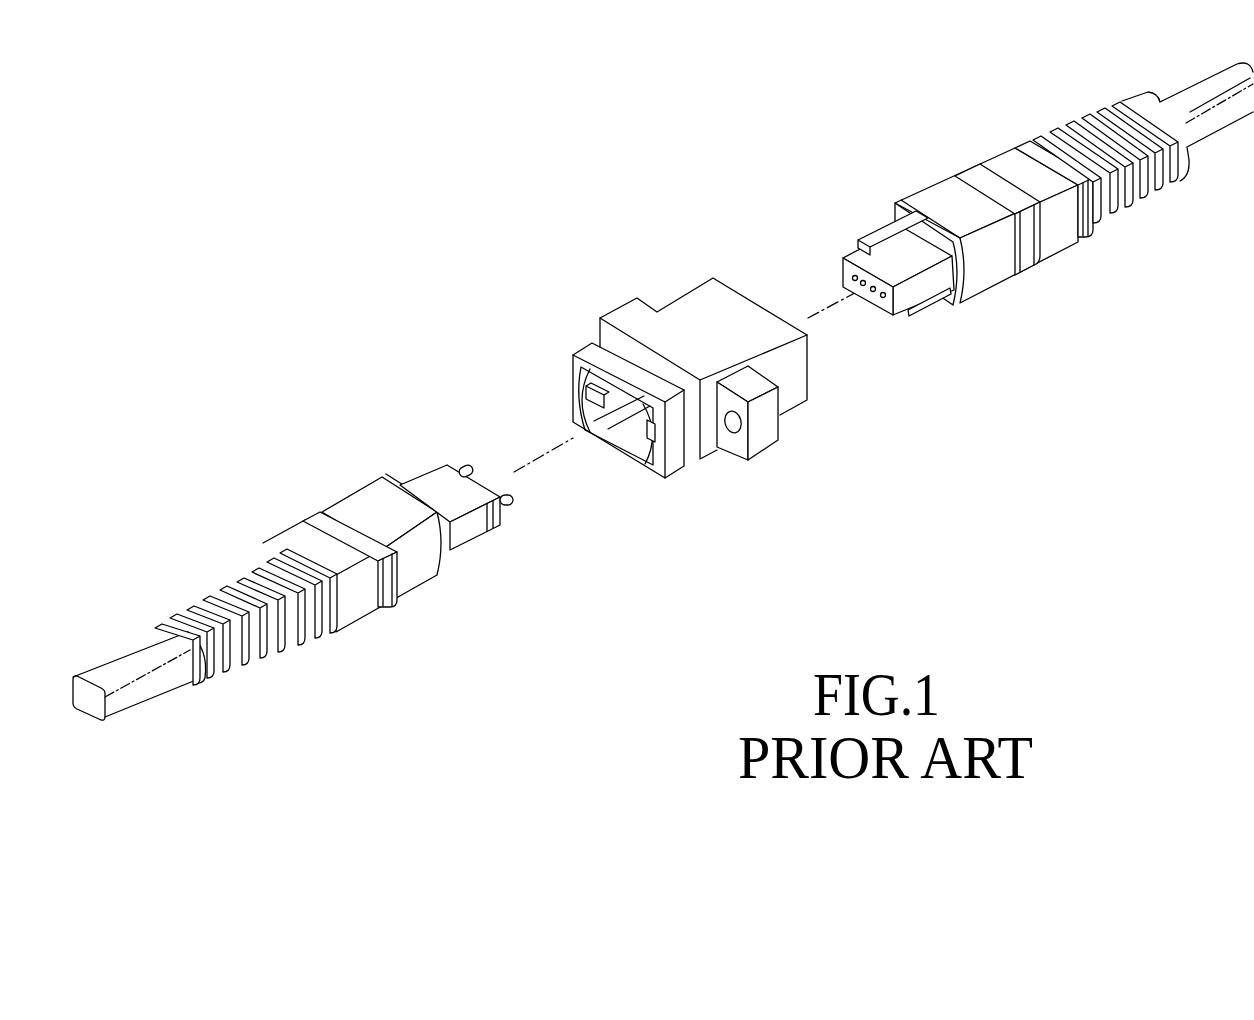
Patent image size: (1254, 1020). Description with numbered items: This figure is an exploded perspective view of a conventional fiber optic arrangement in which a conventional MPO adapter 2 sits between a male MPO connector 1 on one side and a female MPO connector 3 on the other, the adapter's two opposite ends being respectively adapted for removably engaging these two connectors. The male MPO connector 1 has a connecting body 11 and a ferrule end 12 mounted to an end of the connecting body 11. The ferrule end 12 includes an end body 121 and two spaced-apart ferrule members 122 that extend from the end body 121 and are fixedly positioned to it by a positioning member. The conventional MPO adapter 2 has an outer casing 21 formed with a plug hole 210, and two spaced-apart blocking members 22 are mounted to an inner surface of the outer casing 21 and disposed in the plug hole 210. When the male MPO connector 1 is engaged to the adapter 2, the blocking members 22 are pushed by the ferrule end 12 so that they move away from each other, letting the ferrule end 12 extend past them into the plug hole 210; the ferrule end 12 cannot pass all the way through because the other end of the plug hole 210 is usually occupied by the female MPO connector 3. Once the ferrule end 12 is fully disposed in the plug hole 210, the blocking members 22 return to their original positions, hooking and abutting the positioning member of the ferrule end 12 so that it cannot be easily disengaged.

The male MPO connector 1 is at (339, 540).
The connecting body 11 is at (412, 582).
The ferrule end 12 is at (463, 502).
The end body 121 is at (447, 465).
The ferrule members 122 is at (462, 468).
The MPO adapter 2 is at (664, 360).
The outer casing 21 is at (710, 293).
The blocking members 22 is at (587, 394).
The plug hole 210 is at (641, 452).
The female MPO connector 3 is at (976, 139).